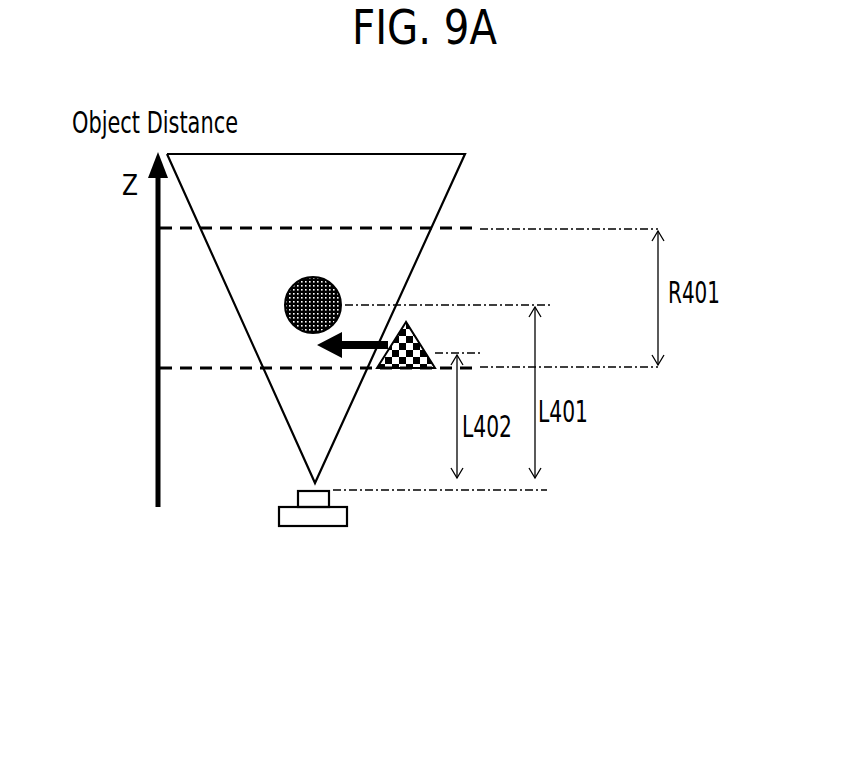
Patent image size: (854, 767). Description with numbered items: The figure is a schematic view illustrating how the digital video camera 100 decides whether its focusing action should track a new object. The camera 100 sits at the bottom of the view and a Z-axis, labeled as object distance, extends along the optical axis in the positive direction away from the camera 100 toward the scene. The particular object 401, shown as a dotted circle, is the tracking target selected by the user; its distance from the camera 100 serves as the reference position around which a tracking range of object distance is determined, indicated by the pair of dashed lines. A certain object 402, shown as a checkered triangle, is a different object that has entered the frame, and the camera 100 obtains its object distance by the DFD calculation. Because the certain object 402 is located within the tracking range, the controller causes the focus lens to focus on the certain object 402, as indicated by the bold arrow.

The digital video camera 100 is at (337, 526).
The particular object 401 is at (292, 332).
The certain object 402 is at (413, 372).